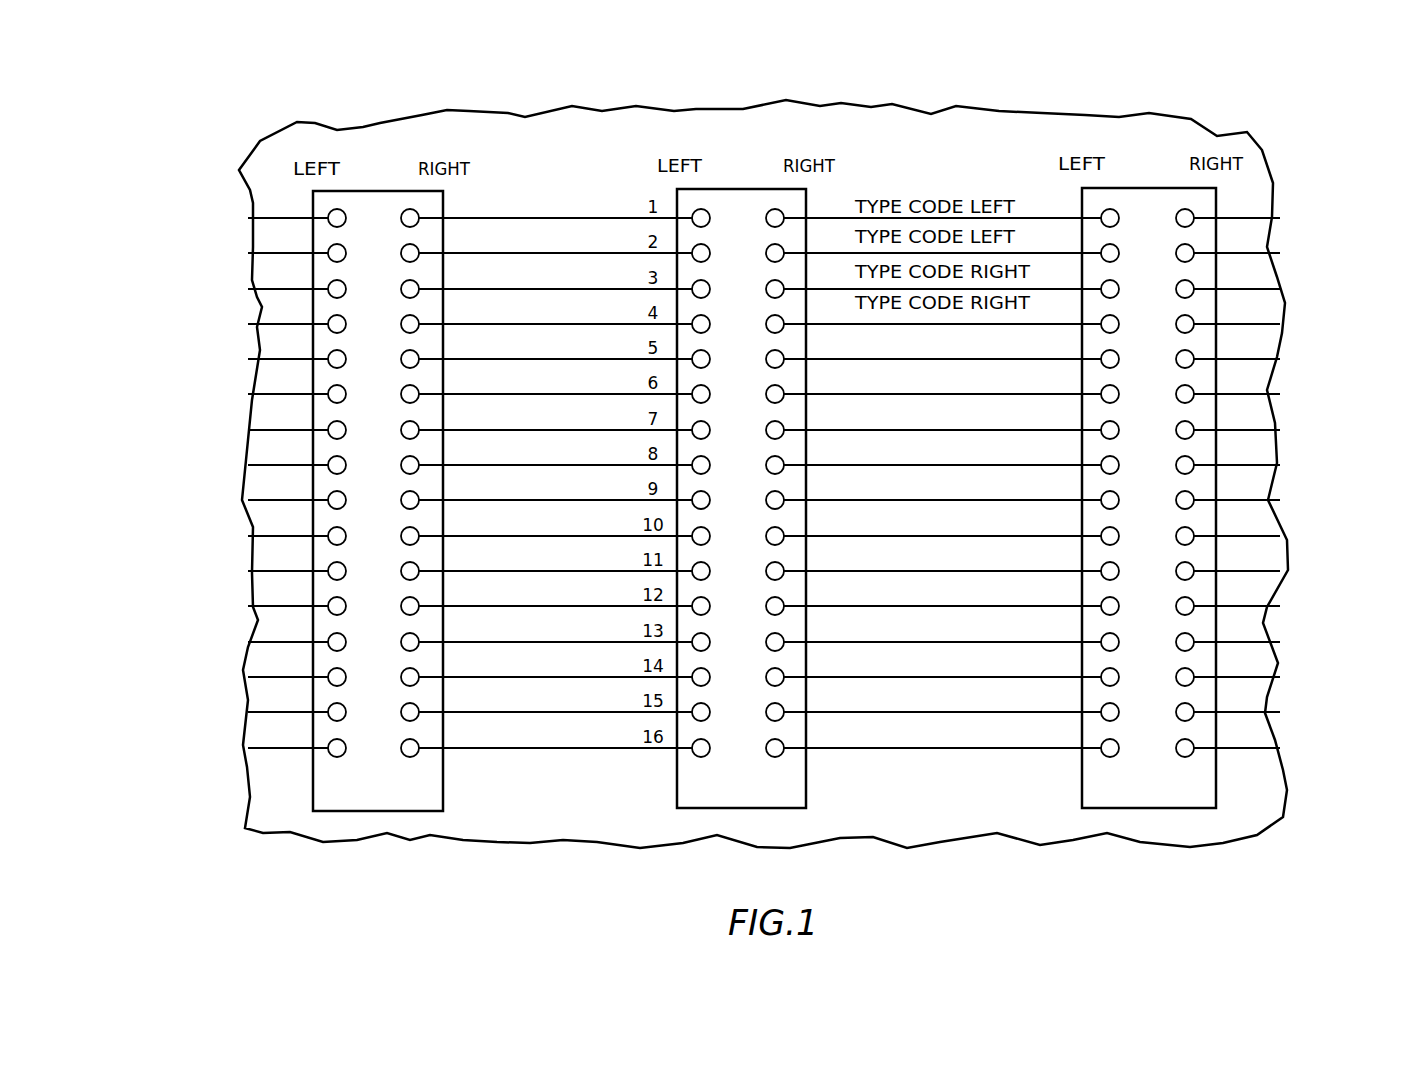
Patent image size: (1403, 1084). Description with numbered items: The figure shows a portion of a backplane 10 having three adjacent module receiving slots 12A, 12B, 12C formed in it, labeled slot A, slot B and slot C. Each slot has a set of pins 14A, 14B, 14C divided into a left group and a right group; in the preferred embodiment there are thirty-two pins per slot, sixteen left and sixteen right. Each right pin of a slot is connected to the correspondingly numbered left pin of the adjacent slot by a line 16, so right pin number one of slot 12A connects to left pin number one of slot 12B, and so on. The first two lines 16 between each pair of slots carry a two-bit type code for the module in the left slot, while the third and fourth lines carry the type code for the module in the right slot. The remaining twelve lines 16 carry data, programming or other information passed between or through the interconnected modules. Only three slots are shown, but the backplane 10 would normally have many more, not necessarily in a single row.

The backplane 10 is at (1284, 189).
The module receiving slot 12A is at (409, 470).
The module receiving slot 12B is at (779, 463).
The module receiving slot 12C is at (1107, 465).
The pins 14A is at (405, 211).
The pins 14B is at (770, 211).
The pins 14C is at (1179, 210).
The line 16 is at (272, 316).